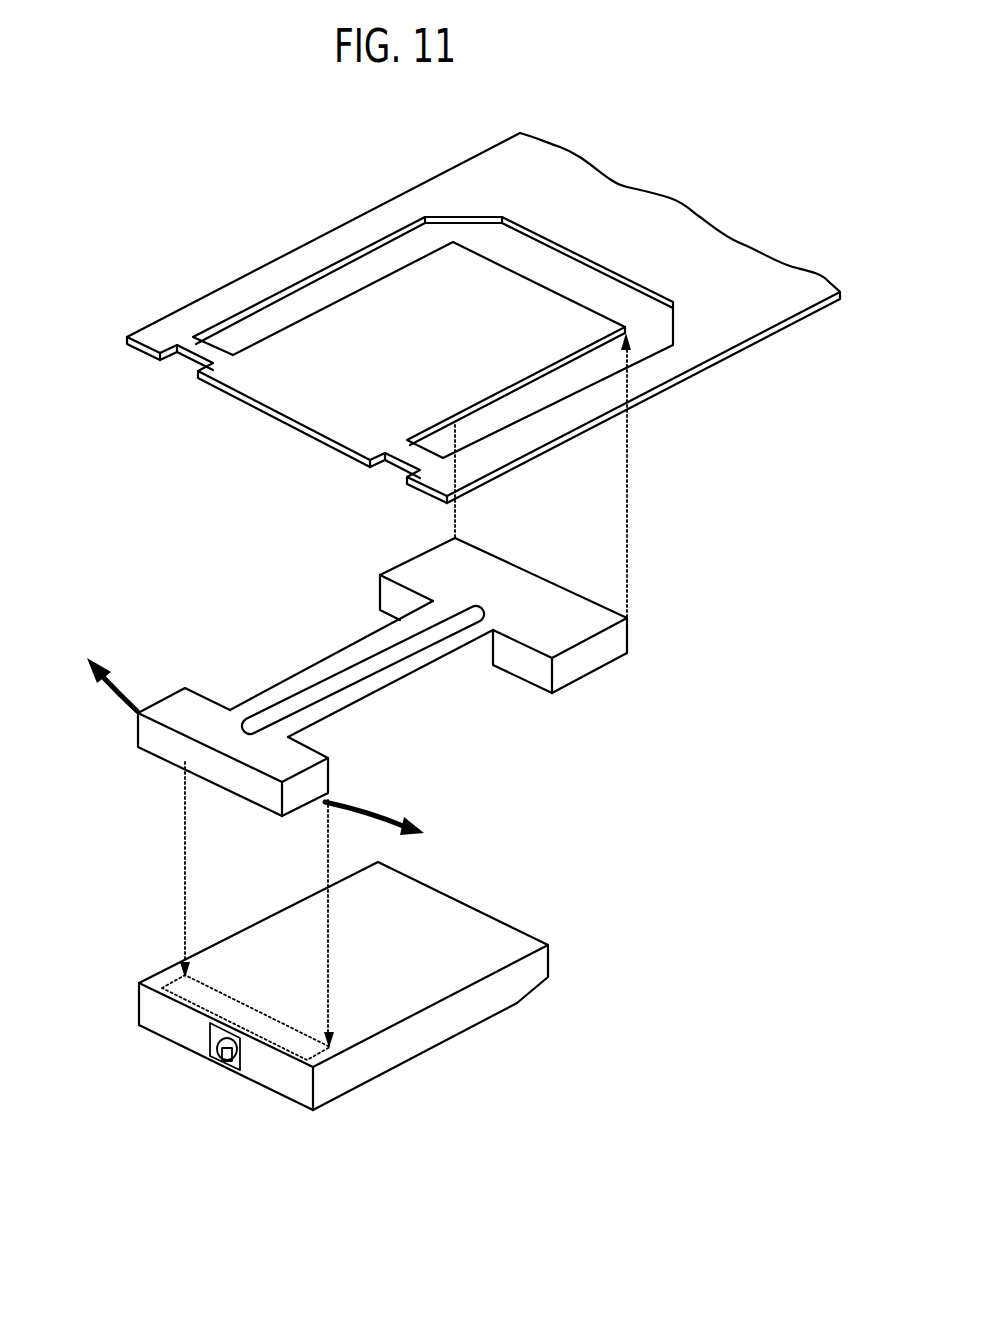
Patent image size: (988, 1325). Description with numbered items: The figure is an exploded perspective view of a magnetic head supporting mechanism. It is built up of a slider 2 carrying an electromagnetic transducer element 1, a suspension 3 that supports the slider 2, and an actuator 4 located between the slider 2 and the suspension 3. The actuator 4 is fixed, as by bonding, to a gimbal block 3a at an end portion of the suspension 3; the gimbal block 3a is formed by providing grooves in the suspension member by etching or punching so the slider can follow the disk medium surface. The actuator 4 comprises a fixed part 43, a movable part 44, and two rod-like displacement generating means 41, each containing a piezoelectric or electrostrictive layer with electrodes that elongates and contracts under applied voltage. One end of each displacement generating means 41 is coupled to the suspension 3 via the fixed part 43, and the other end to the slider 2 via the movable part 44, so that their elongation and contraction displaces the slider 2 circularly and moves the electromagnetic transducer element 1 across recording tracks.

The electromagnetic transducer element 1 is at (218, 1057).
The slider 2 is at (440, 912).
The suspension 3 is at (483, 307).
The gimbal block 3a is at (290, 337).
The actuator 4 is at (330, 668).
The displacement generating means 41 is at (340, 662).
The fixed part 43 is at (408, 573).
The movable part 44 is at (180, 703).